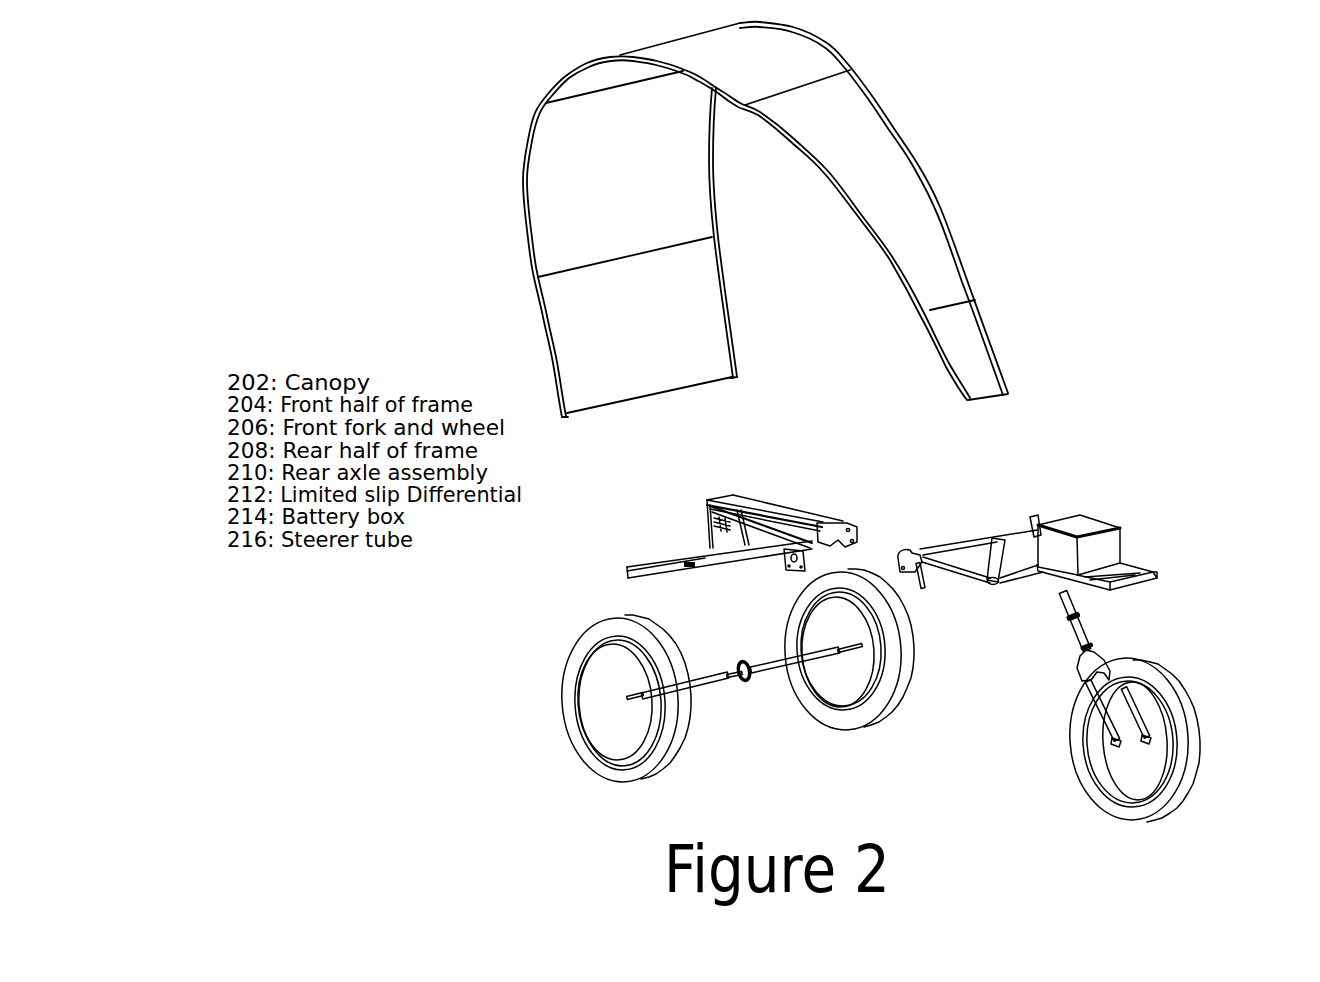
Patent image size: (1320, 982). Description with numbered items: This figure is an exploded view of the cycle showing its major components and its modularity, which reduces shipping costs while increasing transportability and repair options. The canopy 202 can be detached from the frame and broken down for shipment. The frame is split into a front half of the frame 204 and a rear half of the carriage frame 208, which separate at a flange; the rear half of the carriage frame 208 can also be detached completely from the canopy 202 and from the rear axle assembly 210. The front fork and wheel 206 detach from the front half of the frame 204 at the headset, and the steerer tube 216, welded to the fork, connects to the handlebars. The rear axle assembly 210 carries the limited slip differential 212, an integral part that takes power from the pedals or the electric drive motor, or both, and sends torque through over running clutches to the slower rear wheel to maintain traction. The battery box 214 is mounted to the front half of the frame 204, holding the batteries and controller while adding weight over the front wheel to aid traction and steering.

The canopy 202 is at (967, 335).
The front half of the frame 204 is at (1010, 571).
The front fork and wheel 206 is at (1079, 685).
The rear half of the carriage frame 208 is at (740, 515).
The rear axle assembly 210 is at (662, 692).
The limited slip differential 212 is at (748, 678).
The battery box 214 is at (1095, 545).
The steerer tube 216 is at (1073, 620).